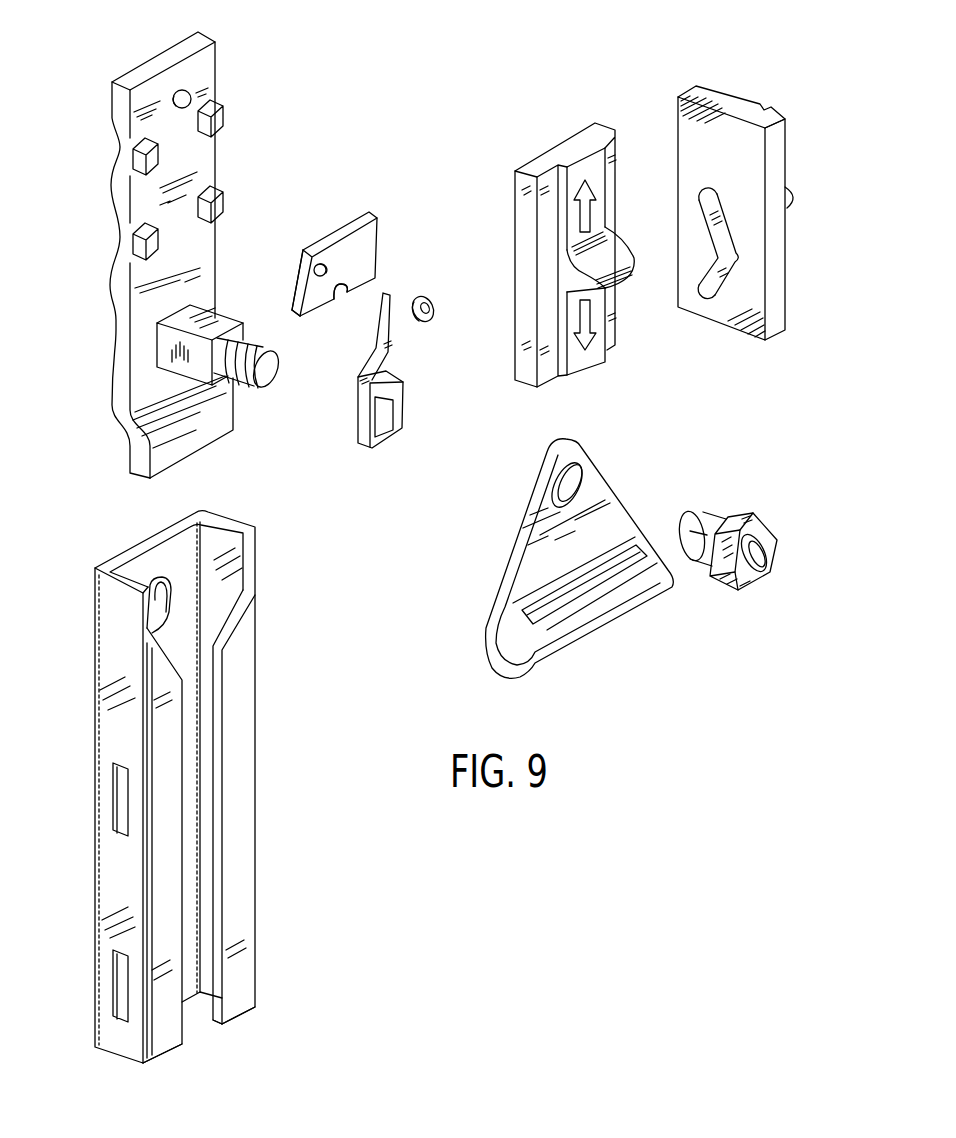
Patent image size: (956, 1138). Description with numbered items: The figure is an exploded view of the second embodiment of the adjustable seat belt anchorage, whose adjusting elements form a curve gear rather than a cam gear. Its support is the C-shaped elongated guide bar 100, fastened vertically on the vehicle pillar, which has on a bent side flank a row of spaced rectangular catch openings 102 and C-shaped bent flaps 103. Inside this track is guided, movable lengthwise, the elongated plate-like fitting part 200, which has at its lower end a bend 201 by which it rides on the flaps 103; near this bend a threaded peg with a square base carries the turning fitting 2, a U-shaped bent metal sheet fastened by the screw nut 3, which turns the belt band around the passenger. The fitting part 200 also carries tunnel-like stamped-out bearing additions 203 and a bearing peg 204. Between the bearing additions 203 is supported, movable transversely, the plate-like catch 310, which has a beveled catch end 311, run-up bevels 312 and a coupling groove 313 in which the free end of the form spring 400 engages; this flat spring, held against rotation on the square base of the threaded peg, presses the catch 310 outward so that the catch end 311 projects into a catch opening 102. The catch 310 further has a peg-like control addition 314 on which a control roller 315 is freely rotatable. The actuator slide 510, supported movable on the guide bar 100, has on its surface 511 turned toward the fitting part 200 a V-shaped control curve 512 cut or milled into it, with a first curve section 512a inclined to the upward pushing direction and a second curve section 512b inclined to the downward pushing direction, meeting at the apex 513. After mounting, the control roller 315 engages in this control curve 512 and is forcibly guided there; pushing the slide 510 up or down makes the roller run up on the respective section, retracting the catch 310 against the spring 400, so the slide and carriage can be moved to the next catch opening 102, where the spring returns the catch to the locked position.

The turning fitting 2 is at (622, 503).
The screw nut 3 is at (755, 512).
The guide bar 100 is at (270, 606).
The catch openings 102 is at (118, 808).
The flaps 103 is at (168, 1037).
The fitting part 200 is at (177, 48).
The bend 201 is at (220, 422).
The bearing additions 203 is at (216, 119).
The bearing peg 204 is at (224, 322).
The catch 310 is at (372, 236).
The catch end 311 is at (293, 315).
The run-up bevels 312 is at (303, 268).
The coupling groove 313 is at (338, 290).
The control addition 314 is at (320, 262).
The control roller 315 is at (427, 297).
The form spring 400 is at (400, 406).
The actuator slide 510 is at (573, 140).
The surface 511 is at (528, 160).
The control curve 512 is at (738, 235).
The first curve section 512a is at (708, 193).
The second curve section 512b is at (706, 300).
The slot apex 513 is at (716, 256).